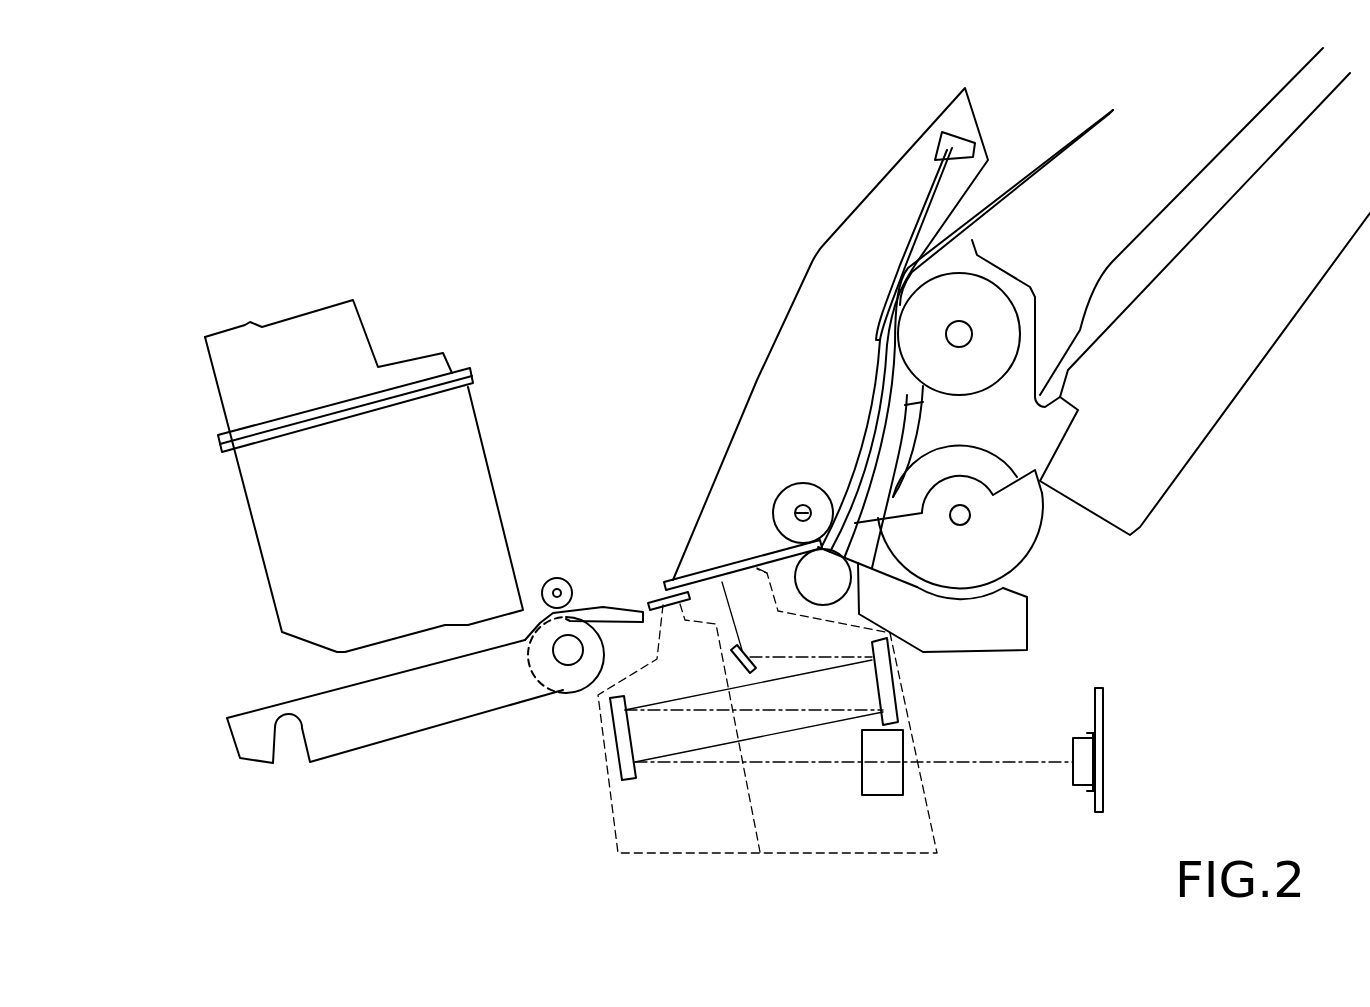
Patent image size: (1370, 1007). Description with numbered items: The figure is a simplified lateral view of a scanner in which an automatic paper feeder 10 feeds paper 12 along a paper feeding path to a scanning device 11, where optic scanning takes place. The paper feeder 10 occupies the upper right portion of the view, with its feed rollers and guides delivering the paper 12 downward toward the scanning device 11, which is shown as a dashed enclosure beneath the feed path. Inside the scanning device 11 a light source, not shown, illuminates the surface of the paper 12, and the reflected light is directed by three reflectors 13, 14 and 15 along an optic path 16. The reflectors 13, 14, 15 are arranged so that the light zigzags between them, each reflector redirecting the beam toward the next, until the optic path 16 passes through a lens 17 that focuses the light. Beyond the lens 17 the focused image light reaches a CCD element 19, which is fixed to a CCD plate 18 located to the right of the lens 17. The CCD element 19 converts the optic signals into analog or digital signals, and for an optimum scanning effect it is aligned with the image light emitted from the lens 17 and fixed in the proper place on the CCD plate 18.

The automatic paper feeder 10 is at (1127, 140).
The scanning device 11 is at (613, 815).
The paper 12 is at (1055, 158).
The reflector 13 is at (733, 655).
The reflector 14 is at (887, 687).
The reflector 15 is at (622, 767).
The optic path 16 is at (777, 763).
The lens 17 is at (897, 778).
The CCD plate 18 is at (1103, 722).
The CCD element 19 is at (1083, 777).